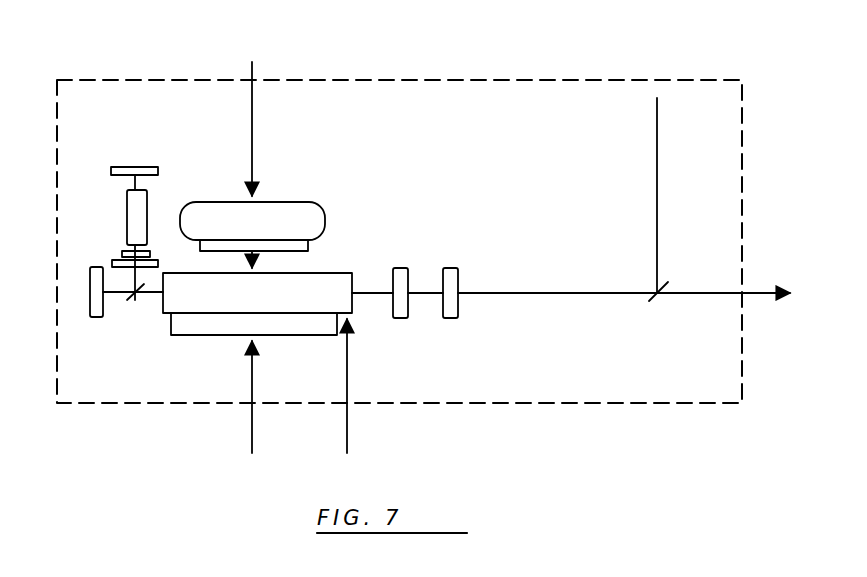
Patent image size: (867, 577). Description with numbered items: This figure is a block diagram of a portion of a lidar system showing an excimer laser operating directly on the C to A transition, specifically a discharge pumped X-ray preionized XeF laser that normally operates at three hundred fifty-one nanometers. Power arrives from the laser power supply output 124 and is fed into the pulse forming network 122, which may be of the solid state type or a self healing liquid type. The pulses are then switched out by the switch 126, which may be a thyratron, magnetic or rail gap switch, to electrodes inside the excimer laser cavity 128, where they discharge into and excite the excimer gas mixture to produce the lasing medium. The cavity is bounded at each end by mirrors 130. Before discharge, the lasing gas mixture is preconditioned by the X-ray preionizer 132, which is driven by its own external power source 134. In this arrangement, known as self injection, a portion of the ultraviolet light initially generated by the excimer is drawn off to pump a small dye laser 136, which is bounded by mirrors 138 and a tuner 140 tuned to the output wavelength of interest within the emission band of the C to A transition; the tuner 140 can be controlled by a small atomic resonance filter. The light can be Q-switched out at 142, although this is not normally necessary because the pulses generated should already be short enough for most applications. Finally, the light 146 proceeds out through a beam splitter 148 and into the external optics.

The pulse forming network 122 is at (300, 182).
The laser power supply output 124 is at (245, 117).
The switch 126 is at (312, 246).
The excimer laser cavity 128 is at (305, 271).
The mirrors 130 is at (97, 318).
The X-ray preionizer 132 is at (270, 337).
The external power source 134 is at (242, 413).
The dye laser 136 is at (147, 201).
The mirrors 138 is at (135, 167).
The tuner 140 is at (122, 253).
The Q-switch 142 is at (462, 242).
The light 146 is at (528, 294).
The beam splitter 148 is at (653, 298).